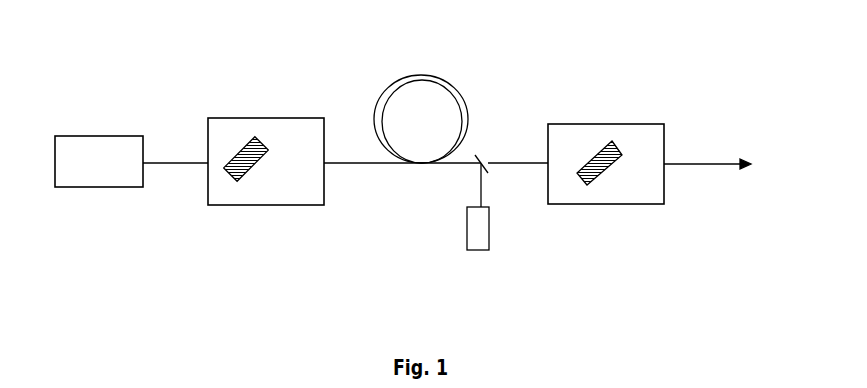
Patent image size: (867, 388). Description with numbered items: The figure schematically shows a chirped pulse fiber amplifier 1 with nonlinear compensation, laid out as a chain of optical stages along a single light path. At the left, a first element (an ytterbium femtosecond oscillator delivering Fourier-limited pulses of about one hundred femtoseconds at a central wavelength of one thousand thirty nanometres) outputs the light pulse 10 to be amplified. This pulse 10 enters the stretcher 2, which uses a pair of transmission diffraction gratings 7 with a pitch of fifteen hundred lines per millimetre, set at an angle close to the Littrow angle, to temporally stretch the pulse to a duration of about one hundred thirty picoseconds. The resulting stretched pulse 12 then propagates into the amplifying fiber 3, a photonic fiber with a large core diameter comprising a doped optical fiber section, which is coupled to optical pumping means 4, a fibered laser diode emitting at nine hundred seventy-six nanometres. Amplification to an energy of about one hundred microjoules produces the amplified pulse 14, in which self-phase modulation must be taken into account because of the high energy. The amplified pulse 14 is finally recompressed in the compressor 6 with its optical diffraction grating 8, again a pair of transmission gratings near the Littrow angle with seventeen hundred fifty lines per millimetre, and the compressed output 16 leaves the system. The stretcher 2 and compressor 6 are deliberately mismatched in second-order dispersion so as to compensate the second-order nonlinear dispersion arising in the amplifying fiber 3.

The chirped pulse fiber amplifier 1 is at (83, 187).
The light pulse 10 is at (172, 160).
The stretcher 2 is at (295, 207).
The transmission diffraction gratings 7 is at (240, 180).
The stretched pulse 12 is at (367, 160).
The amplifying fiber 3 is at (423, 73).
The optical pumping means 4 is at (482, 252).
The amplified pulse 14 is at (510, 162).
The compressor 6 is at (598, 124).
The optical diffraction grating 8 is at (590, 183).
The output light beam 16 is at (700, 163).